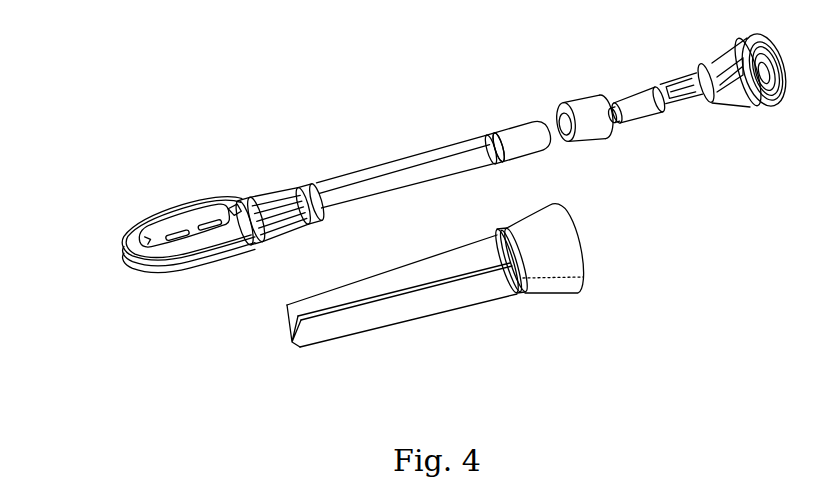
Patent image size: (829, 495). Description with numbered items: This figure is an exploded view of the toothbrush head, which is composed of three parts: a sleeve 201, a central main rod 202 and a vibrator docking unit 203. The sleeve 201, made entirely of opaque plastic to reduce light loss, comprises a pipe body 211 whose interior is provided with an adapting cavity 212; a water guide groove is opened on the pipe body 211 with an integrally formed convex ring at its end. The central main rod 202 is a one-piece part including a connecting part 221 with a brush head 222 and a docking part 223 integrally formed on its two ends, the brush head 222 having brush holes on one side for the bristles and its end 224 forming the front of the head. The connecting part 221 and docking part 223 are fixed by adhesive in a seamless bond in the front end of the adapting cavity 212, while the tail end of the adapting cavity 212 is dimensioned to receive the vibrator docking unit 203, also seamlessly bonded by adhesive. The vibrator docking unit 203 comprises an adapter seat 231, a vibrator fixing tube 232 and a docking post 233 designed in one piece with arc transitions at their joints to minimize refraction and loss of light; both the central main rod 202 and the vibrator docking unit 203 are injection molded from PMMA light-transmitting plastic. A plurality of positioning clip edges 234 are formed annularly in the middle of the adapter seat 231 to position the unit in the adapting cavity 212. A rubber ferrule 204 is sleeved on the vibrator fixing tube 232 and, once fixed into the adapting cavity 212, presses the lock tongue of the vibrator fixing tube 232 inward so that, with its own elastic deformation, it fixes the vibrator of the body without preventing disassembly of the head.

The sleeve 201 is at (310, 402).
The pipe body 211 is at (452, 285).
The adapting cavity 212 is at (293, 334).
The central main rod 202 is at (83, 165).
The connecting part 221 is at (408, 164).
The brush head 222 is at (212, 211).
The docking part 223 is at (517, 130).
The handle head 224 is at (151, 236).
The vibrator docking unit 203 is at (677, 162).
The adapter seat 231 is at (762, 74).
The vibrator fixing tube 232 is at (692, 105).
The docking post 233 is at (647, 110).
The positioning clip edge 234 is at (737, 83).
The rubber ferrule 204 is at (585, 107).